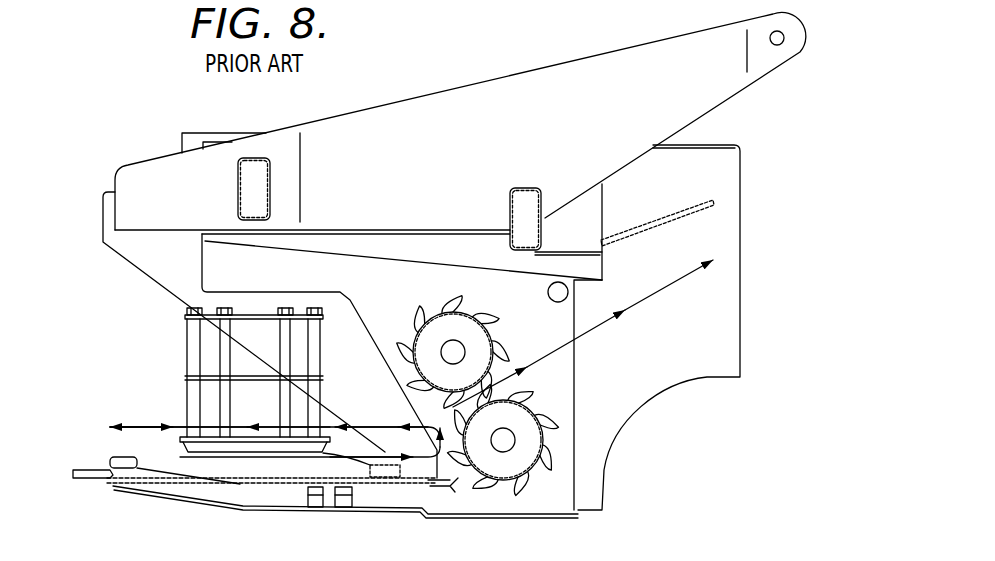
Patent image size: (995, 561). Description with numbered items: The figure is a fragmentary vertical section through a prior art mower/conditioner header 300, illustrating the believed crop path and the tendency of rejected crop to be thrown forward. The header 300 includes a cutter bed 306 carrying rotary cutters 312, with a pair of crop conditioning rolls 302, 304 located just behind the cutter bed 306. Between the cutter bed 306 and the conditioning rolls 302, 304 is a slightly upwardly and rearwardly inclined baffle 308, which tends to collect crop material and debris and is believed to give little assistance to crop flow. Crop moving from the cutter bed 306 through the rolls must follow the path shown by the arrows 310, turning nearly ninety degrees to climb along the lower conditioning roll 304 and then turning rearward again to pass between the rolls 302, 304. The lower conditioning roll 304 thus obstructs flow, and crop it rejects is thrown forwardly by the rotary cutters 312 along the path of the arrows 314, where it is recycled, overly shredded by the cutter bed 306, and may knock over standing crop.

The mower/conditioner header 300 is at (752, 144).
The crop conditioning roll 302 is at (445, 302).
The lower conditioning roll 304 is at (553, 407).
The cutter bed 306 is at (233, 513).
The baffle 308 is at (432, 482).
The arrows 310 is at (658, 292).
The rotary cutters 312 is at (170, 457).
The arrows 314 is at (148, 427).